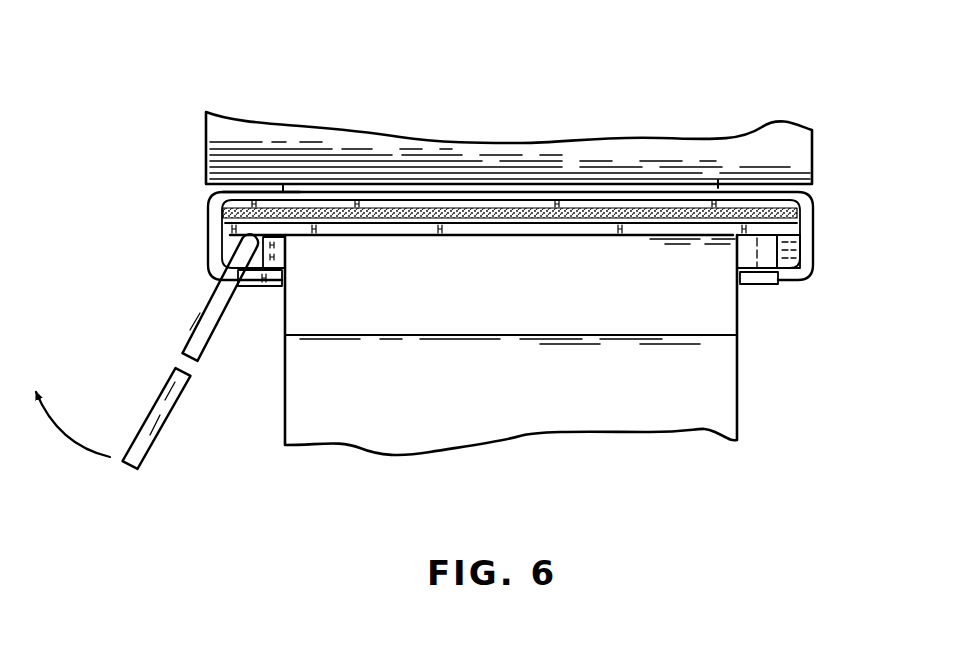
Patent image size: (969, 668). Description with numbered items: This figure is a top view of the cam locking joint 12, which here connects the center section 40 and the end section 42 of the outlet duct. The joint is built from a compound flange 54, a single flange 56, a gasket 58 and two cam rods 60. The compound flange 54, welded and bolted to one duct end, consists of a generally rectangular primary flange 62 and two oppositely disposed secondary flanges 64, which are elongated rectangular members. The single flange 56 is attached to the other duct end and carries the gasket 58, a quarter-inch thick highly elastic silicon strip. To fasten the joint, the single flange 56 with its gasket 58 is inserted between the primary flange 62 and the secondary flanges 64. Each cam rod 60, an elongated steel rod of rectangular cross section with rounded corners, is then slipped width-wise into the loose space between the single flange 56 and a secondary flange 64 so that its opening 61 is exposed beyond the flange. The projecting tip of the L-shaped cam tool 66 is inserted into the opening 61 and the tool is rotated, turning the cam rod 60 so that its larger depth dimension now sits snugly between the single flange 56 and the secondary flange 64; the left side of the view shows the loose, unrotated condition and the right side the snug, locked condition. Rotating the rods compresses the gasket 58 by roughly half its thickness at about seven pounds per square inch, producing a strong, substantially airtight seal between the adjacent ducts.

The cam locking joint 12 is at (164, 84).
The center section 40 is at (570, 407).
The end section 42 is at (510, 150).
The compound flange 54 is at (817, 194).
The single flange 56 is at (776, 225).
The gasket 58 is at (218, 206).
The cam rod 60 is at (784, 265).
The opening 61 is at (801, 253).
The primary flange 62 is at (643, 200).
The secondary flange 64 is at (753, 285).
The cam tool 66 is at (168, 413).